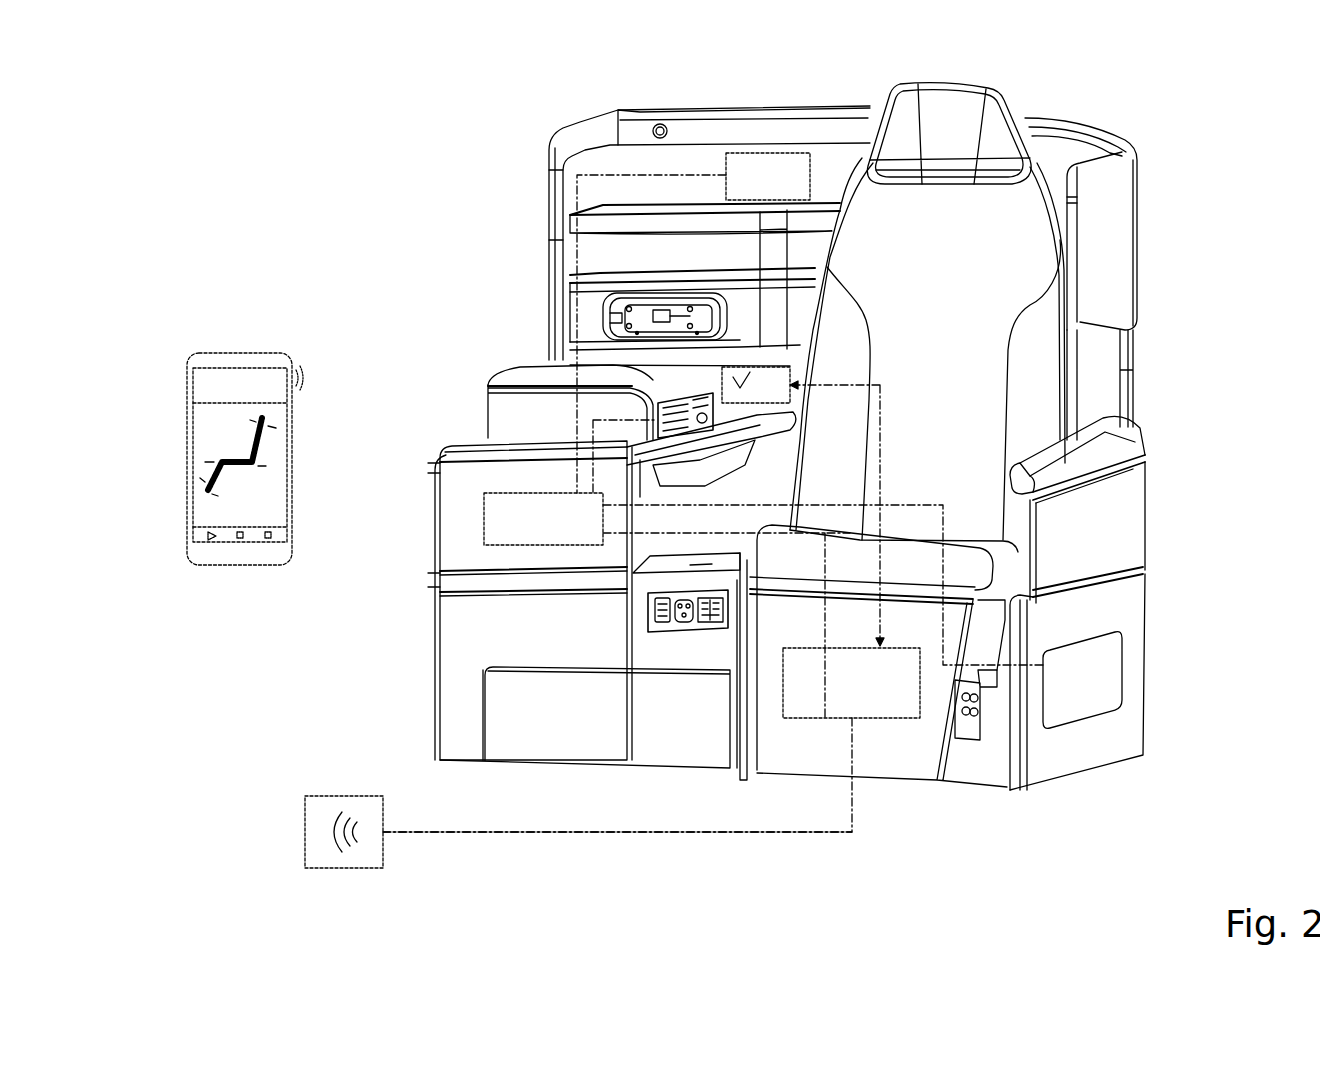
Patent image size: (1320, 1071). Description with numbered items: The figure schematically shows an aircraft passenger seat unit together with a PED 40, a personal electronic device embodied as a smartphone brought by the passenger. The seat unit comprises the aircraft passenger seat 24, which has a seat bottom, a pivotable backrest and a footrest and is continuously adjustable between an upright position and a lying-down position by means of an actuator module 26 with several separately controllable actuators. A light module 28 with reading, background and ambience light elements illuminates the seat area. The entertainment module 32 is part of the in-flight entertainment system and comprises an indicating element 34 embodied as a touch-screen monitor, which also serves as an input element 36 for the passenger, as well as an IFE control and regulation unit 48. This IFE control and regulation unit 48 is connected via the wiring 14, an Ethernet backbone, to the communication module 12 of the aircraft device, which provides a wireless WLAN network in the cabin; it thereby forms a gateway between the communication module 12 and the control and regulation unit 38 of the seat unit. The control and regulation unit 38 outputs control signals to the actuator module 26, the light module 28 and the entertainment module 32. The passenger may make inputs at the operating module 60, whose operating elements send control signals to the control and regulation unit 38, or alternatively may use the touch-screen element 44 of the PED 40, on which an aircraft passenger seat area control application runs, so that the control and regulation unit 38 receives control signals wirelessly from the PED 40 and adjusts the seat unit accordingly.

The communication module 12 is at (305, 832).
The wiring 14 is at (513, 834).
The aircraft passenger seat 24 is at (963, 352).
The actuator module 26 is at (1087, 690).
The light module 28 is at (783, 152).
The entertainment module 32 is at (660, 372).
The indicating element 34 is at (550, 363).
The input element 36 is at (750, 367).
The control and regulation unit 38 is at (483, 520).
The PED 40 is at (209, 416).
The touch-screen element 44 is at (230, 433).
The IFE control and regulation unit 48 is at (903, 718).
The operating module 60 is at (645, 310).